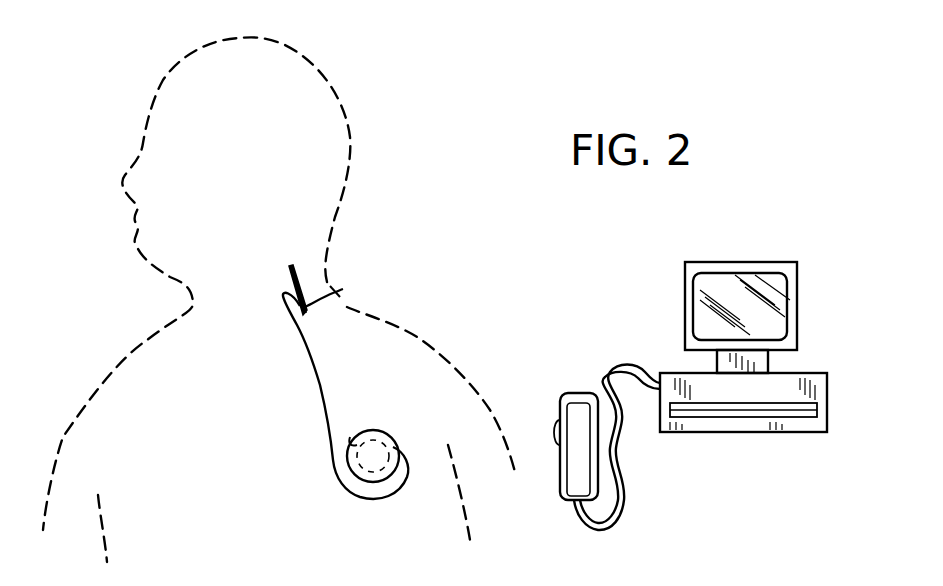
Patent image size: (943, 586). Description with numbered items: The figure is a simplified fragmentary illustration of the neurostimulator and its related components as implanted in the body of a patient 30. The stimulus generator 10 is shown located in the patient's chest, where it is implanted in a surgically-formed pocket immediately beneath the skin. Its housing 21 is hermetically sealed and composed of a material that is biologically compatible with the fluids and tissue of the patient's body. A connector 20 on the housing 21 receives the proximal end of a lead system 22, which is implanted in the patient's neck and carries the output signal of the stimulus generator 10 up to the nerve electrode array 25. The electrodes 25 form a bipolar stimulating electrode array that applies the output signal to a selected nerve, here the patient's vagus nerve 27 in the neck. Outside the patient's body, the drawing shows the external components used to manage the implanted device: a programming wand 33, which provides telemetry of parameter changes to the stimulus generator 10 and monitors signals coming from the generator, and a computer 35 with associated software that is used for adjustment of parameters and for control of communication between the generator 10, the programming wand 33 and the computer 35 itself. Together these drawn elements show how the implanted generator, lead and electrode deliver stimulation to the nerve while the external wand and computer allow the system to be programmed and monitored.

The stimulus generator 10 is at (382, 460).
The connector 20 is at (390, 437).
The housing 21 is at (350, 437).
The lead system 22 is at (322, 374).
The stimulating electrodes 25 is at (294, 290).
The vagus nerve 27 is at (326, 293).
The patient 30 is at (322, 258).
The programming wand 33 is at (583, 395).
The computer 35 is at (807, 347).